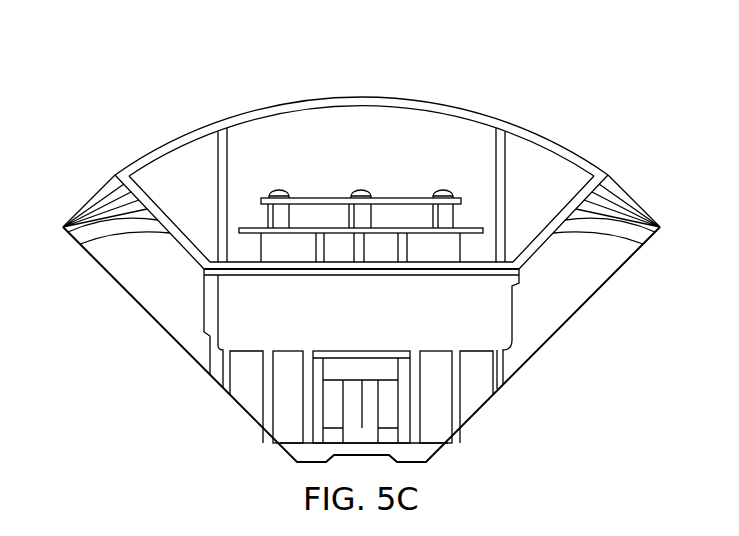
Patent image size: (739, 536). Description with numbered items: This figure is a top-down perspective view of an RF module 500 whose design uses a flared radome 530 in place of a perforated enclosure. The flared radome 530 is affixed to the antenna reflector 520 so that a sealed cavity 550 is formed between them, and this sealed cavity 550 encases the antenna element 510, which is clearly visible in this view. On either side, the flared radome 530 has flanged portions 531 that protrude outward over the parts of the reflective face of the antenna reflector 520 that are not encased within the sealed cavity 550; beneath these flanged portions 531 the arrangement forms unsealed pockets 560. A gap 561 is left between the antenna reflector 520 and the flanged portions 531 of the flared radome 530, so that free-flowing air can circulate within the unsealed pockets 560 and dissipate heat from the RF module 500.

The RF module 500 is at (490, 64).
The antenna element 510 is at (321, 195).
The antenna reflector 520 is at (607, 177).
The flared radome 530 is at (320, 98).
The flanged portions 531 is at (160, 148).
The sealed cavity 550 is at (393, 132).
The unsealed pockets 560 is at (193, 168).
The gap 561 is at (112, 164).